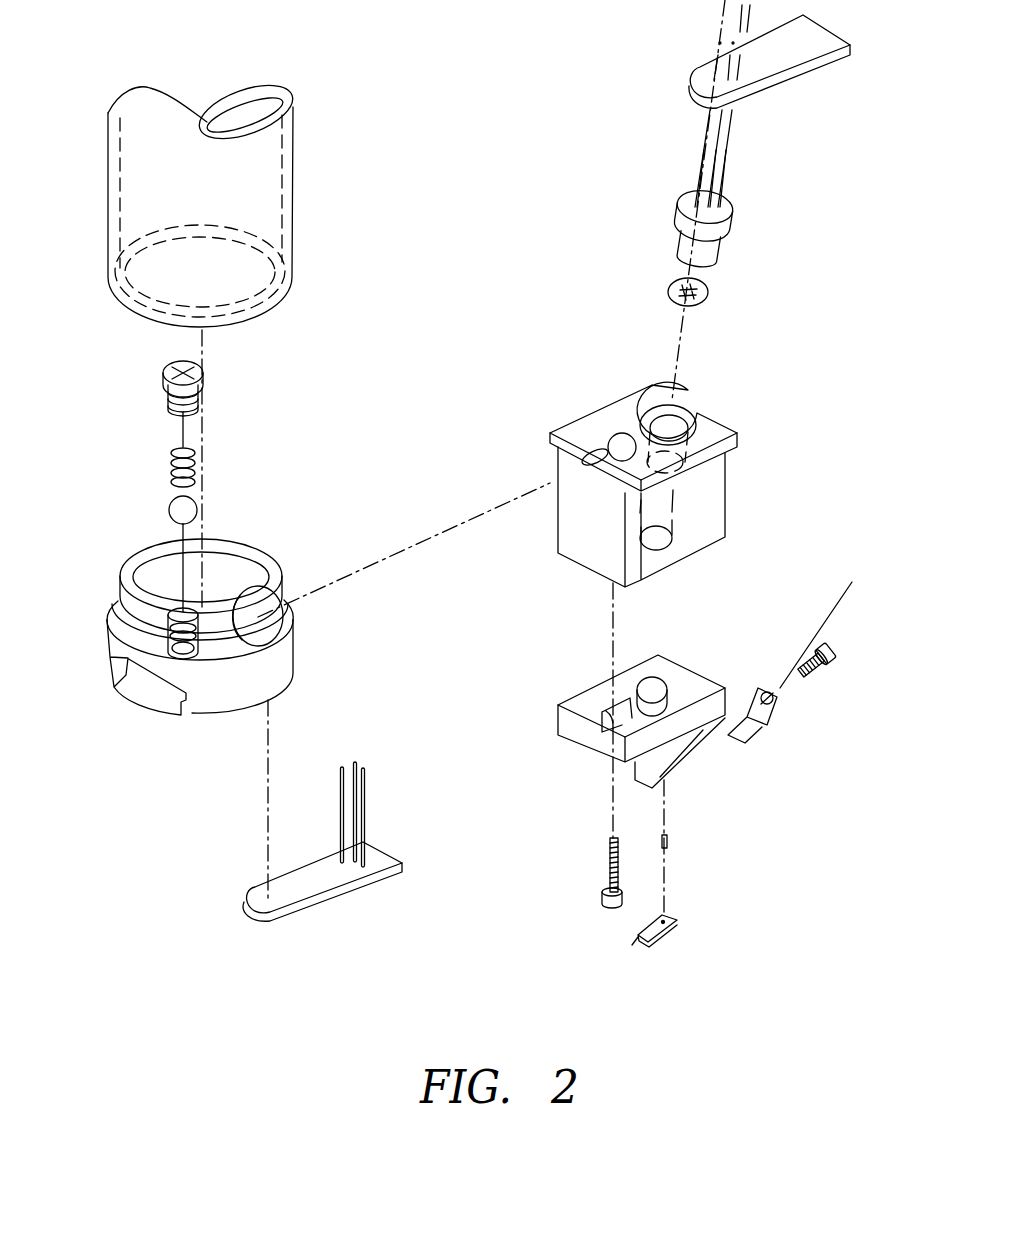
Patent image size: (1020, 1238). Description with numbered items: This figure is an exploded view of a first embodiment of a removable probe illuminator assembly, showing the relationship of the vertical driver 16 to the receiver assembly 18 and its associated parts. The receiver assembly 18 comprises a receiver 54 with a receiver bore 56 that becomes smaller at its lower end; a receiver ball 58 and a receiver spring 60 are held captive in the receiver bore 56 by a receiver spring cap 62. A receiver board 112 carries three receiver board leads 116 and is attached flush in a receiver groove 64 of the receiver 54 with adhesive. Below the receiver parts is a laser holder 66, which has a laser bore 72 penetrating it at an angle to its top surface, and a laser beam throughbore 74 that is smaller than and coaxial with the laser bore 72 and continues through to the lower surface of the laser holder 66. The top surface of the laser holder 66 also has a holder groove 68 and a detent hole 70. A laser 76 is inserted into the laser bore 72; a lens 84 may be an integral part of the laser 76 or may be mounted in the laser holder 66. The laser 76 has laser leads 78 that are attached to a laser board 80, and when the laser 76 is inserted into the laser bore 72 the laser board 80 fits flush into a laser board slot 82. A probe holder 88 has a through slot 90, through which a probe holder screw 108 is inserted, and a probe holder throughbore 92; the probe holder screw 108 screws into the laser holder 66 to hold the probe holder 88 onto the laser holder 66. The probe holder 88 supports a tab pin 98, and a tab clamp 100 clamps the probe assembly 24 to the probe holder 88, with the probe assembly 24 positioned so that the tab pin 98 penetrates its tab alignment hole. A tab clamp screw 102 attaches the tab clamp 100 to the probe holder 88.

The vertical driver 16 is at (293, 183).
The receiver assembly 18 is at (287, 540).
The probe assembly 24 is at (695, 917).
The receiver 54 is at (293, 650).
The receiver bore 56 is at (168, 627).
The receiver ball 58 is at (169, 509).
The receiver spring 60 is at (178, 468).
The receiver spring cap 62 is at (160, 380).
The receiver groove 64 is at (253, 615).
The laser holder 66 is at (727, 518).
The holder groove 68 is at (587, 462).
The detent hole 70 is at (587, 455).
The laser bore 72 is at (722, 420).
The laser beam throughbore 74 is at (677, 488).
The laser 76 is at (720, 240).
The laser leads 78 is at (728, 177).
The laser board 80 is at (803, 75).
The laser board slot 82 is at (692, 412).
The lens 84 is at (708, 290).
The probe holder 88 is at (707, 675).
The through slot 90 is at (612, 705).
The probe holder throughbore 92 is at (658, 678).
The tab pin 98 is at (668, 842).
The tab clamp 100 is at (773, 712).
The tab clamp screw 102 is at (839, 624).
The probe holder screw 108 is at (607, 865).
The receiver board 112 is at (330, 908).
The receiver board leads 116 is at (363, 797).